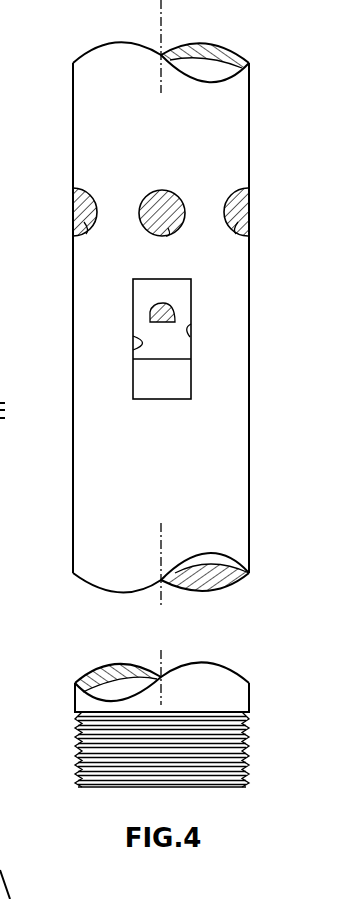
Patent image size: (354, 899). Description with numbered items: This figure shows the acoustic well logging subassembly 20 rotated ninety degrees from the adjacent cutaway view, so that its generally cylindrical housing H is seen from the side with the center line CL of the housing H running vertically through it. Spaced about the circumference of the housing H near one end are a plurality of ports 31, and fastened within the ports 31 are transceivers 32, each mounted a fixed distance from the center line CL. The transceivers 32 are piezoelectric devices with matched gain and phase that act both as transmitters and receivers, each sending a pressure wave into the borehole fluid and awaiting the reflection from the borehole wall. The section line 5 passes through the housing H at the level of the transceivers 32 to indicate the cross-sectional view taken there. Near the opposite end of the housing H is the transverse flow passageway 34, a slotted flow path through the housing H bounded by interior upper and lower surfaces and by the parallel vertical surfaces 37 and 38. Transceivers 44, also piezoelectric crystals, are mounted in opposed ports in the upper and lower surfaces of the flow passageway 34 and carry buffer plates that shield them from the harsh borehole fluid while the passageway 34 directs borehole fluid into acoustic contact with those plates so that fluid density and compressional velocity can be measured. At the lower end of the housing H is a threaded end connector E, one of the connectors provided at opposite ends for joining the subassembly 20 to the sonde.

The subassembly 20 is at (26, 109).
The section line 5- 5 is at (73, 212).
The transceivers 32 is at (89, 194).
The ports 31 is at (90, 229).
The transverse flow passageway 34 is at (150, 392).
The transceivers 44 is at (175, 309).
The vertical surface 37 is at (134, 344).
The vertical surface 38 is at (190, 323).
The housing H is at (249, 531).
The threaded end connectors E is at (249, 762).
The center line CL is at (161, 15).